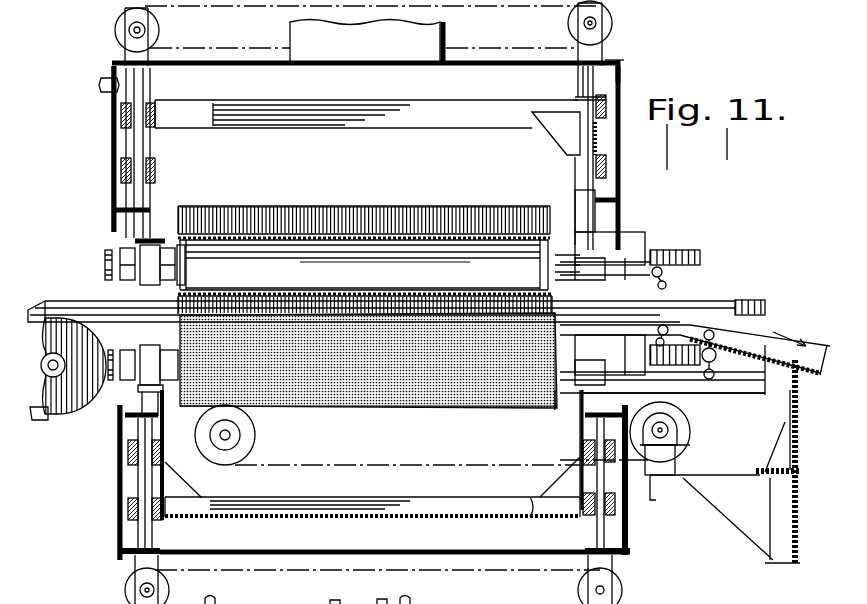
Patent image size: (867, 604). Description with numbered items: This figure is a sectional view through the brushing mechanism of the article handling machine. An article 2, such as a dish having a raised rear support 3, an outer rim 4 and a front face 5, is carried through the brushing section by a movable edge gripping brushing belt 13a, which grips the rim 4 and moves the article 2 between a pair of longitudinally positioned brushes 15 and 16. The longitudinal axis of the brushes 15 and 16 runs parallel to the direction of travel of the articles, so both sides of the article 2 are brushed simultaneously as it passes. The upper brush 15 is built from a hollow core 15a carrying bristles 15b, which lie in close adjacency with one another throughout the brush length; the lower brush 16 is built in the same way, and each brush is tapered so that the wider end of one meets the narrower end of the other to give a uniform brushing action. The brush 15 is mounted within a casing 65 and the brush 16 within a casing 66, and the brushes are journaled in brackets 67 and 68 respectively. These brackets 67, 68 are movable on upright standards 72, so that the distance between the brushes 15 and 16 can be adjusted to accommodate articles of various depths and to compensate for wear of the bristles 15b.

The article 2 is at (407, 307).
The raised rear support 3 is at (362, 318).
The outer rim 4 is at (457, 307).
The front face 5 is at (365, 318).
The edge gripping brushing belt 13a is at (665, 297).
The brush 15 is at (340, 163).
The hollow core 15a is at (457, 252).
The bristles 15b is at (357, 207).
The brush 16 is at (282, 412).
The casing 65 is at (150, 137).
The casing 66 is at (118, 500).
The bracket 67 is at (178, 117).
The bracket 68 is at (192, 507).
The standards 72 is at (133, 152).